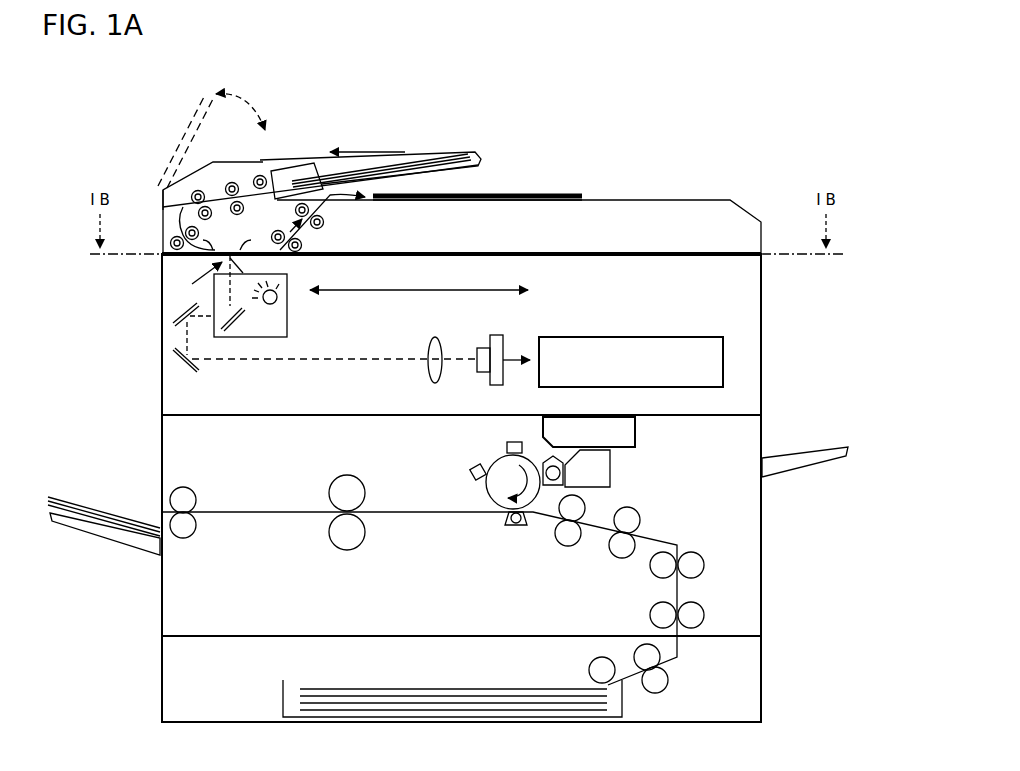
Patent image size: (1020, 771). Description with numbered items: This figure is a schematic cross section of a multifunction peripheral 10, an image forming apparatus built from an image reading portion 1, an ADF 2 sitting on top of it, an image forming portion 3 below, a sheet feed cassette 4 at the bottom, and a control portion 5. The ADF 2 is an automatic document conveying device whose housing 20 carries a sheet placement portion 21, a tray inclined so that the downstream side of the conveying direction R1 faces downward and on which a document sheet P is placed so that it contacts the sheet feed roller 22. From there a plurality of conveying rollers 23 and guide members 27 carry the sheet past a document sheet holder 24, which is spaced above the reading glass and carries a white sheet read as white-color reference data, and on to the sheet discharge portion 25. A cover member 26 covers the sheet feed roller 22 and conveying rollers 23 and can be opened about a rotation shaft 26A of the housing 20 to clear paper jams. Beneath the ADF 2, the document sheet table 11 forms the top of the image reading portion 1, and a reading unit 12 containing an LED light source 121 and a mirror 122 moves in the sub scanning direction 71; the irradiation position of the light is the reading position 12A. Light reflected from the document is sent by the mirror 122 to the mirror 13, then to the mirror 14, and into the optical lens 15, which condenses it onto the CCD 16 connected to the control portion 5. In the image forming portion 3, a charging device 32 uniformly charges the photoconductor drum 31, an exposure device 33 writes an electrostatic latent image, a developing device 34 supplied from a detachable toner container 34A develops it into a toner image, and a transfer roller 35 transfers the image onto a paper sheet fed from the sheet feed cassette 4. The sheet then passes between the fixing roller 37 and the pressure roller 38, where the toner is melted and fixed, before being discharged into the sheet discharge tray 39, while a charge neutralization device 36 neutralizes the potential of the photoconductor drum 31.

The multifunction peripheral 10 is at (74, 117).
The image reading portion 1 is at (762, 320).
The ADF 2 is at (482, 207).
The housing 20 is at (645, 199).
The cover member 26 is at (184, 110).
The rotation shaft 26A is at (160, 187).
The sheet placement portion 21 is at (476, 150).
The document sheet P is at (425, 160).
The conveying direction R1 is at (366, 150).
The guide members 27 is at (300, 170).
The sheet feed roller 22 is at (257, 172).
The conveying rollers 23 is at (230, 181).
The document sheet holder 24 is at (227, 244).
The sheet discharge portion 25 is at (530, 199).
The document sheet table 11 is at (586, 256).
The reading unit 12 is at (272, 306).
The reading position 12A is at (192, 281).
The LED light source 121 is at (284, 299).
The mirror 122 is at (237, 318).
The mirror 13 is at (170, 318).
The mirror 14 is at (172, 363).
The sub scanning direction 71 is at (368, 292).
The optical lens 15 is at (430, 340).
The CCD 16 is at (496, 334).
The control portion 5 is at (723, 370).
The image forming portion 3 is at (762, 545).
The photoconductor drum 31 is at (487, 488).
The charging device 32 is at (505, 447).
The exposure device 33 is at (637, 428).
The developing device 34 is at (557, 490).
The toner container 34A is at (612, 471).
The transfer roller 35 is at (516, 527).
The charge neutralization device 36 is at (470, 471).
The fixing roller 37 is at (347, 474).
The pressure roller 38 is at (335, 547).
The sheet discharge tray 39 is at (98, 538).
The sheet feed cassette 4 is at (762, 668).